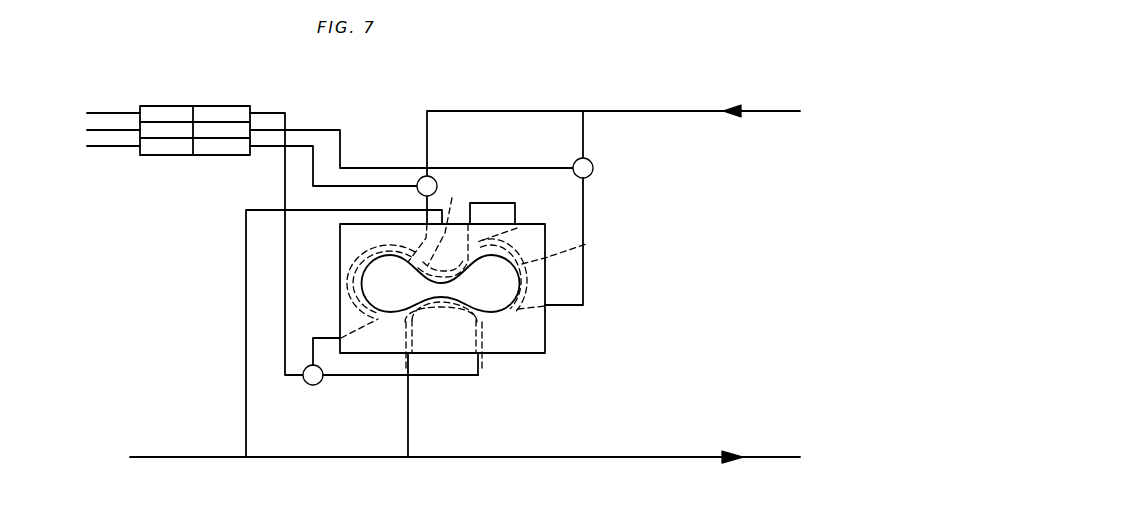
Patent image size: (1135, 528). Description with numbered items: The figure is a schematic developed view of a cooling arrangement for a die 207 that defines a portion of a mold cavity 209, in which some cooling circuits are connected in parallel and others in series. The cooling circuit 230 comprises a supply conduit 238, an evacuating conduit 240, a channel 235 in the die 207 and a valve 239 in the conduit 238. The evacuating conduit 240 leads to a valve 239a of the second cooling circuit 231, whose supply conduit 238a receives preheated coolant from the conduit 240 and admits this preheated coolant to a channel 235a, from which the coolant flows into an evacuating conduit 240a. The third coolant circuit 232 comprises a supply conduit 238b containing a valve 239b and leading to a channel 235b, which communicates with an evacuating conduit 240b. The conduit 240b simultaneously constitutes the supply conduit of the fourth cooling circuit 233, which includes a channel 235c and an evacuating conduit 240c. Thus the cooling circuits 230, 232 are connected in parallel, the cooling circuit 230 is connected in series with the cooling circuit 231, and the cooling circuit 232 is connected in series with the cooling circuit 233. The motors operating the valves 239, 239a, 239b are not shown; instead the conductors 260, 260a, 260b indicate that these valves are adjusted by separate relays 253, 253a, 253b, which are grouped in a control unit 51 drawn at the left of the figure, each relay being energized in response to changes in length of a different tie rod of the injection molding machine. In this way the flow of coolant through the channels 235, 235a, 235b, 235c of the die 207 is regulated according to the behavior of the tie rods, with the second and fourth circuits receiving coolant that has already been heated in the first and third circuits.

The control unit 51 is at (155, 147).
The relay 253a is at (228, 106).
The relay 253b is at (205, 137).
The relay 253 is at (228, 152).
The conductor 260 is at (270, 147).
The conductor 260a is at (288, 268).
The conductor 260b is at (351, 152).
The supply conduit 238 is at (427, 121).
The cooling circuit 230 is at (434, 141).
The valve 239 is at (434, 178).
The valve 239a is at (316, 384).
The valve 239b is at (591, 163).
The third coolant circuit 232 is at (590, 207).
The die 207 is at (546, 338).
The mold cavity 209 is at (505, 295).
The channel 235 is at (347, 288).
The channel 235a is at (410, 322).
The channel 235b is at (556, 274).
The channel 235c is at (437, 283).
The evacuating conduit 240 is at (358, 329).
The evacuating conduit 240a is at (409, 346).
The evacuating conduit 240b is at (518, 226).
The evacuating conduit 240c is at (446, 222).
The supply conduit 238a is at (484, 348).
The supply conduit 238b is at (584, 268).
The second cooling circuit 231 is at (443, 380).
The fourth cooling circuit 233 is at (240, 388).